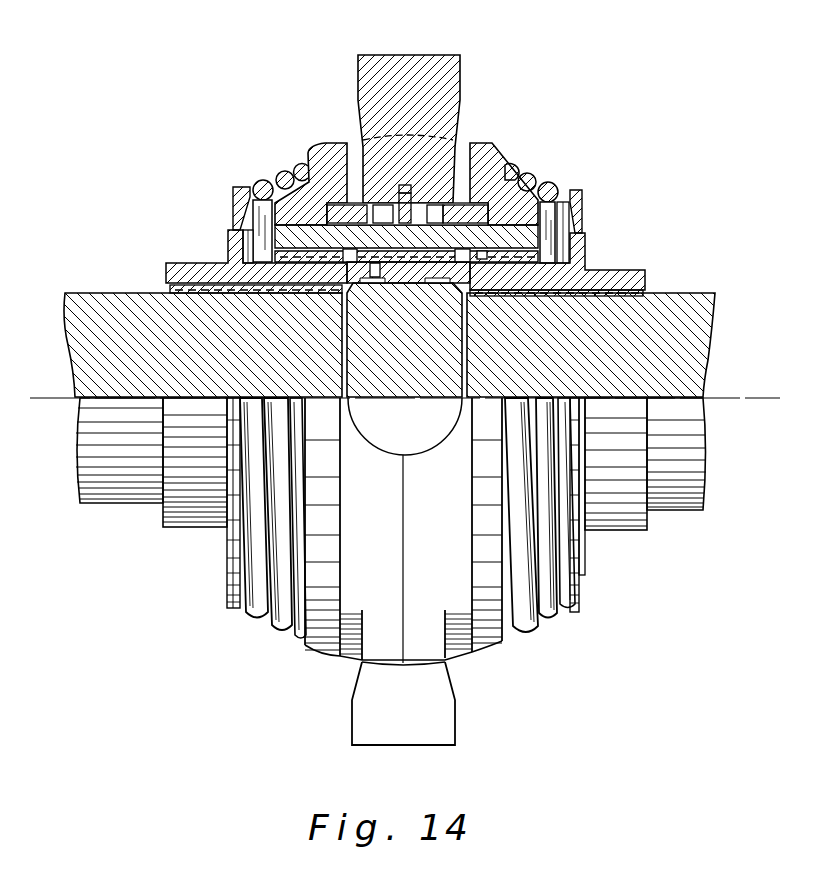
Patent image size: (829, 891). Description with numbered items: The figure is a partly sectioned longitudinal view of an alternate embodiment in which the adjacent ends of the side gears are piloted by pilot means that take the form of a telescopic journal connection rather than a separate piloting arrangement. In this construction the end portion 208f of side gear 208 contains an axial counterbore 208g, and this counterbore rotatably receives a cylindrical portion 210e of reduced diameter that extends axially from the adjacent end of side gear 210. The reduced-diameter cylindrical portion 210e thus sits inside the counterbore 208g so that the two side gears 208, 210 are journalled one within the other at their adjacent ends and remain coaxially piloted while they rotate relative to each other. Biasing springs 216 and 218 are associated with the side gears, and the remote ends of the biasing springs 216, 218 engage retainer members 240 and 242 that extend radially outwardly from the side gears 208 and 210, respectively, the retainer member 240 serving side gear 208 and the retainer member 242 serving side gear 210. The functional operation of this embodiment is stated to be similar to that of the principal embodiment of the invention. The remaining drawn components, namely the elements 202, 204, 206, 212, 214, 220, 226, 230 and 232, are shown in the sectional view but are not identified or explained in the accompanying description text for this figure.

The drive shaft 202 is at (487, 74).
The hub collar left portion 204 is at (333, 141).
The hub collar right portion 206 is at (485, 142).
The side gear 208 is at (187, 262).
The side gear 210 is at (629, 270).
The left housing 212 is at (82, 350).
The right housing 214 is at (690, 365).
The biasing spring 216 is at (264, 180).
The biasing spring 218 is at (556, 186).
The pin 220 is at (390, 226).
The center block 226 is at (427, 373).
The left key bar 230 is at (328, 216).
The right key bar 232 is at (486, 211).
The retainer member 240 is at (233, 197).
The retainer member 242 is at (583, 197).
The axial counterbore 208g is at (370, 270).
The cylindrical portion of reduced diameter 210e is at (383, 288).
The end portion 208f is at (428, 288).